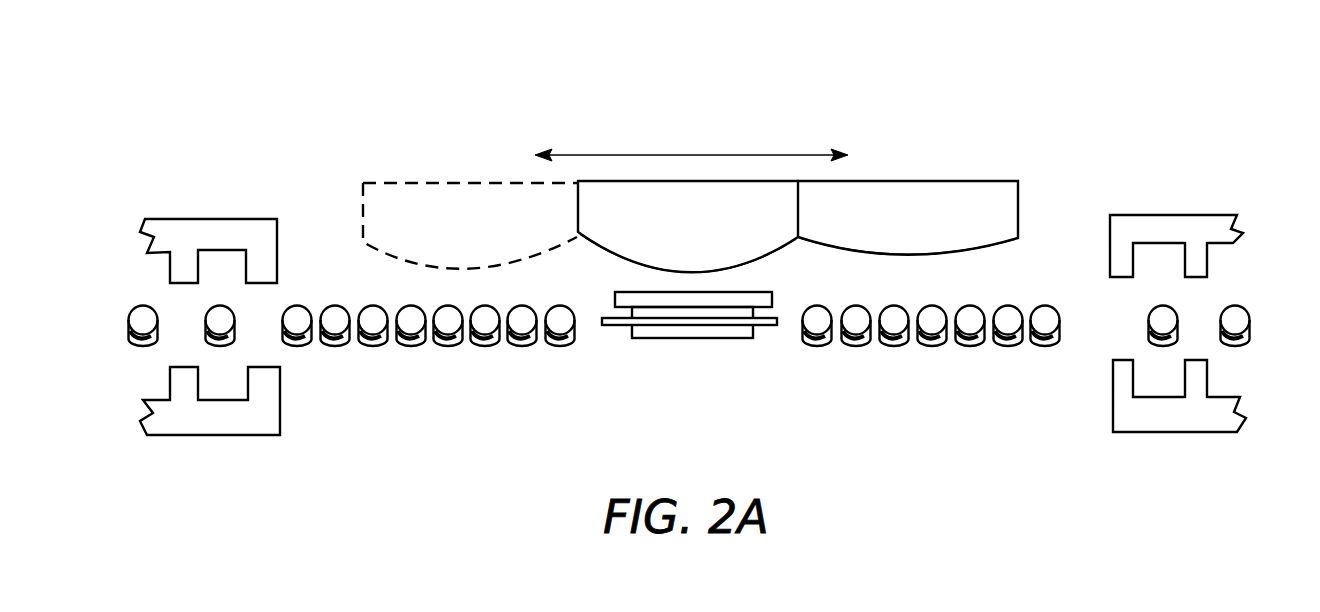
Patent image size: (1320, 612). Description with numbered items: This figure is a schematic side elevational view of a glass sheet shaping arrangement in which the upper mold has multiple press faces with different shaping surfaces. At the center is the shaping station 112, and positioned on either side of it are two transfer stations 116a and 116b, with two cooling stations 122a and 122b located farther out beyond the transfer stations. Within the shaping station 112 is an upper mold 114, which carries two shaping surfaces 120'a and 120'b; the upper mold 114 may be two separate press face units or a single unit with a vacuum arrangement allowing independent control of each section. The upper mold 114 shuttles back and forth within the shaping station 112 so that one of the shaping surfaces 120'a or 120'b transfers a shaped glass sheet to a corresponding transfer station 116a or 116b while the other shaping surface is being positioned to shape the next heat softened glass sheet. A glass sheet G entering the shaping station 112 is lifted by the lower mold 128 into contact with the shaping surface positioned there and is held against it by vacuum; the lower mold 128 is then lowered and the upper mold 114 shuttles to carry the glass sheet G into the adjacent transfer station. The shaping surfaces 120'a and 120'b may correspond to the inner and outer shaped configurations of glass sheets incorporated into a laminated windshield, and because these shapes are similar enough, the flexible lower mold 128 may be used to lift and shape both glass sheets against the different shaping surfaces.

The shaping station 112 is at (697, 105).
The upper mold 114 is at (945, 180).
The transfer station 116a is at (484, 108).
The transfer station 116b is at (952, 105).
The shaping surface 120'a is at (646, 267).
The shaping surface 120'b is at (935, 269).
The cooling station 122a is at (218, 110).
The cooling station 122b is at (1228, 104).
The lower mold 128 is at (615, 326).
The glass sheet G is at (747, 288).